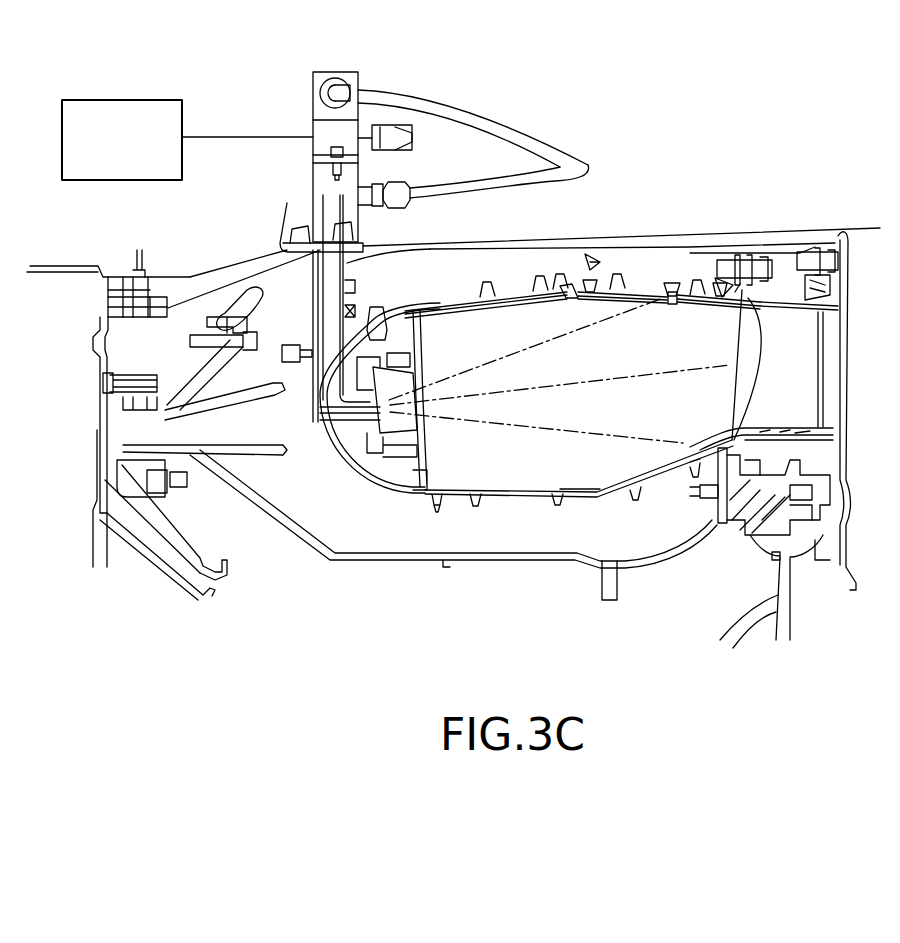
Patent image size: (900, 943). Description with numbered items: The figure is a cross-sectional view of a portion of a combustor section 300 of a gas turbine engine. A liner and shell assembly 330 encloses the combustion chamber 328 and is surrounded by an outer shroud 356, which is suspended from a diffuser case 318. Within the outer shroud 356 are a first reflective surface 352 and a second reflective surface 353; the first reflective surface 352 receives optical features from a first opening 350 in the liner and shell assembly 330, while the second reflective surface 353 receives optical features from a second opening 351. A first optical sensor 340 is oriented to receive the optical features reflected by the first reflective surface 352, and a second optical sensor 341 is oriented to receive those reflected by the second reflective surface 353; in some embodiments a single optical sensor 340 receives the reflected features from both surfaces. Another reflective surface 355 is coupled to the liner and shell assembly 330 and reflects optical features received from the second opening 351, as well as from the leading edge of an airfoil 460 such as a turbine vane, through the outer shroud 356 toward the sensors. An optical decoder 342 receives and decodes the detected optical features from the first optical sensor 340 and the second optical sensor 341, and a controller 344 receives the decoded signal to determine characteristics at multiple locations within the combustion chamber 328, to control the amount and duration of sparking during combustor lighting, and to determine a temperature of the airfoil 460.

The combustor section 300 is at (650, 104).
The diffuser case 318 is at (637, 247).
The combustion chamber 328 is at (638, 423).
The liner and shell assembly 330 is at (510, 305).
The first optical sensor 340 is at (277, 378).
The second optical sensor 341 is at (285, 364).
The optical decoder 342 is at (313, 172).
The controller 344 is at (336, 70).
The first opening 350 is at (587, 297).
The second opening 351 is at (670, 299).
The first reflective surface 352 is at (588, 253).
The second reflective surface 353 is at (674, 304).
The reflective surface 355 is at (720, 299).
The outer shroud 356 is at (573, 274).
The airfoil 460 is at (803, 383).